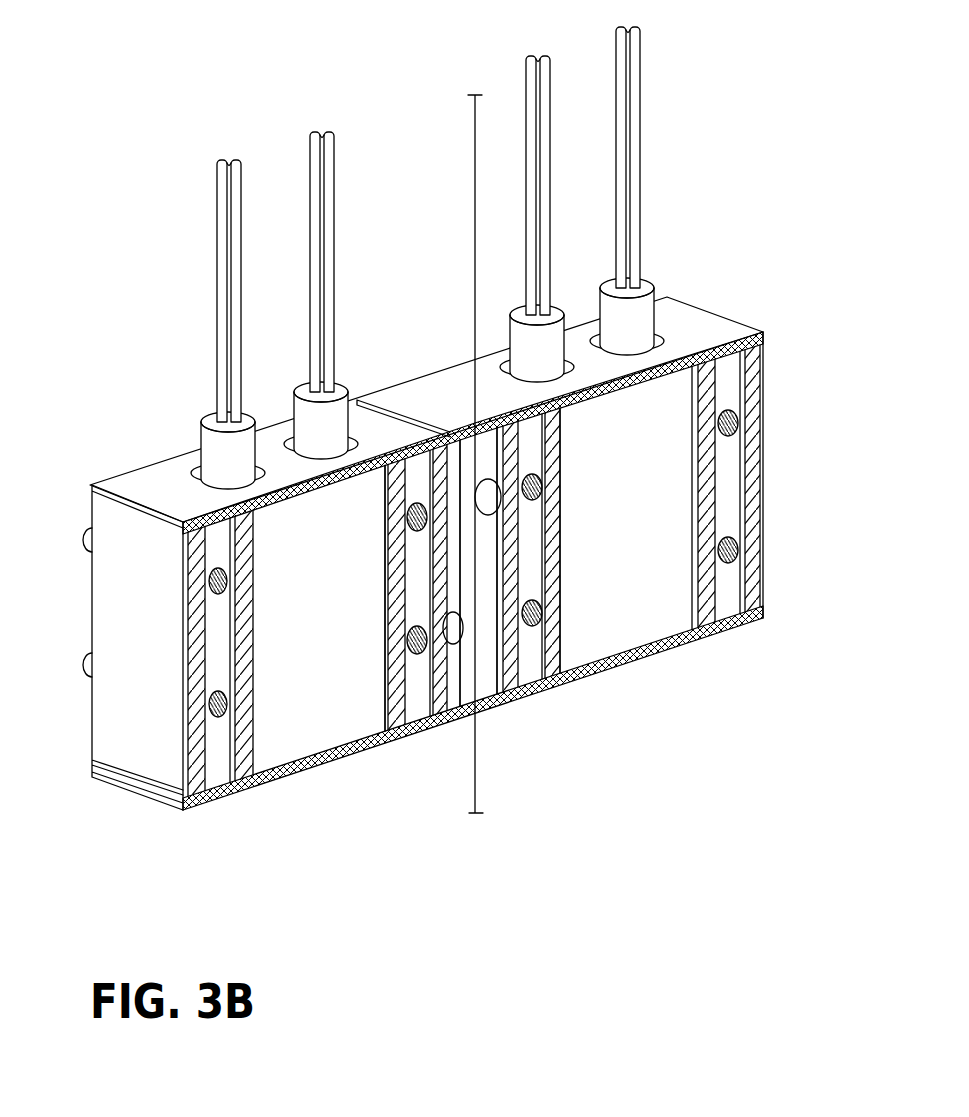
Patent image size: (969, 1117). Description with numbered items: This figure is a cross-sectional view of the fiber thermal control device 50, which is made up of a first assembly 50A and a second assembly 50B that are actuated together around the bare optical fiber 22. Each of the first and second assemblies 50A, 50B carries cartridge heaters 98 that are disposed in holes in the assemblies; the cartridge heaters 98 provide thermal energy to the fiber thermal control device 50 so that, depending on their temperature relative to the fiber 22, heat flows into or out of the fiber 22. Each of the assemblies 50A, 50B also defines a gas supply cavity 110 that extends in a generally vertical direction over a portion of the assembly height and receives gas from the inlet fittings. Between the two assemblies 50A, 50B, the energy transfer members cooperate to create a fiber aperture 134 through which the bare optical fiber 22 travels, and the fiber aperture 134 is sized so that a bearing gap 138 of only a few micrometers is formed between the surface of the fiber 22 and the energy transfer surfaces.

The bare optical fiber 22 is at (473, 188).
The fiber thermal control device 50 is at (409, 475).
The first assembly 50A is at (637, 394).
The second assembly 50B is at (283, 792).
The cartridge heater 98 is at (645, 320).
The gas supply cavity 110 is at (455, 690).
The fiber aperture 134 is at (465, 528).
The bearing gap 138 is at (468, 578).